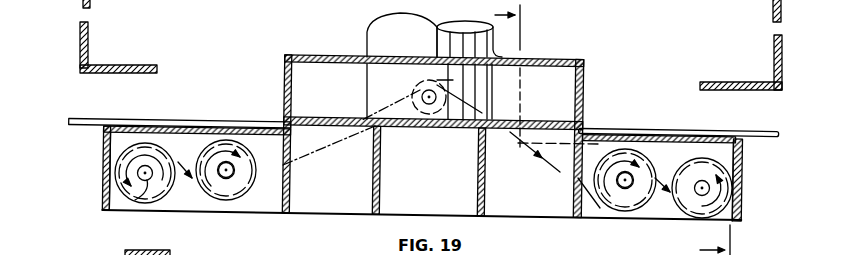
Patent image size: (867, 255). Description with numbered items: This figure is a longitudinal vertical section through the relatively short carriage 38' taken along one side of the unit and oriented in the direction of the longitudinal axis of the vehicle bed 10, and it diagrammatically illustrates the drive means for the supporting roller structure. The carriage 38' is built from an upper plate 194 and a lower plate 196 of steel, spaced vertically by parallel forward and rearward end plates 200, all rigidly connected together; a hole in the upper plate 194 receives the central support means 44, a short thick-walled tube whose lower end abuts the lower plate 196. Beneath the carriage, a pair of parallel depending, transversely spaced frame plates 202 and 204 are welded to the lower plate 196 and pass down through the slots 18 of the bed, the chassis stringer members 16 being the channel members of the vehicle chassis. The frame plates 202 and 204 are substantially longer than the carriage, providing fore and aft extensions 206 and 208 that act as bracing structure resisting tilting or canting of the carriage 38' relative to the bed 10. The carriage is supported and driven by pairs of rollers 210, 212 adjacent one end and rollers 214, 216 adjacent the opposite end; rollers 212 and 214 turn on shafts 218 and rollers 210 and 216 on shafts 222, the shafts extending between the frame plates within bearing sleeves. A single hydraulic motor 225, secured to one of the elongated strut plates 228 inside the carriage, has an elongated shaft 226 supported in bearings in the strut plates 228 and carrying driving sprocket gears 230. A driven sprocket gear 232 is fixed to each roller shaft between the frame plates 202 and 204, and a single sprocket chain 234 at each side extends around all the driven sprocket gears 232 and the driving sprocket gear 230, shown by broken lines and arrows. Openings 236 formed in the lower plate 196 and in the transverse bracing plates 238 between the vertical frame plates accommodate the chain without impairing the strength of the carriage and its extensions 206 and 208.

The vehicle bed 10 is at (103, 121).
The chassis stringer members 16 is at (80, 33).
The slots 18 is at (522, 11).
The carriage 38' is at (362, 66).
The central support means 44 is at (370, 28).
The upper plate 194 is at (546, 62).
The lower plate 196 is at (548, 122).
The forward and rearward end plates 200 is at (284, 62).
The frame plate 202 is at (187, 150).
The frame plate 204 is at (402, 240).
The fore extension 206 is at (103, 158).
The aft extension 208 is at (745, 200).
The roller 210 is at (147, 148).
The roller 212 is at (240, 147).
The roller 214 is at (640, 140).
The roller 216 is at (703, 158).
The shafts 218 is at (234, 171).
The shafts 222 is at (104, 200).
The hydraulic motor 225 is at (551, 107).
The shaft 226 is at (429, 97).
The strut plates 228 is at (528, 73).
The driving sprocket gears 230 is at (433, 113).
The driven sprocket gears 232 is at (160, 147).
The sprocket chain 234 is at (550, 163).
The openings 236 is at (286, 163).
The transverse bracing plates 238 is at (285, 190).